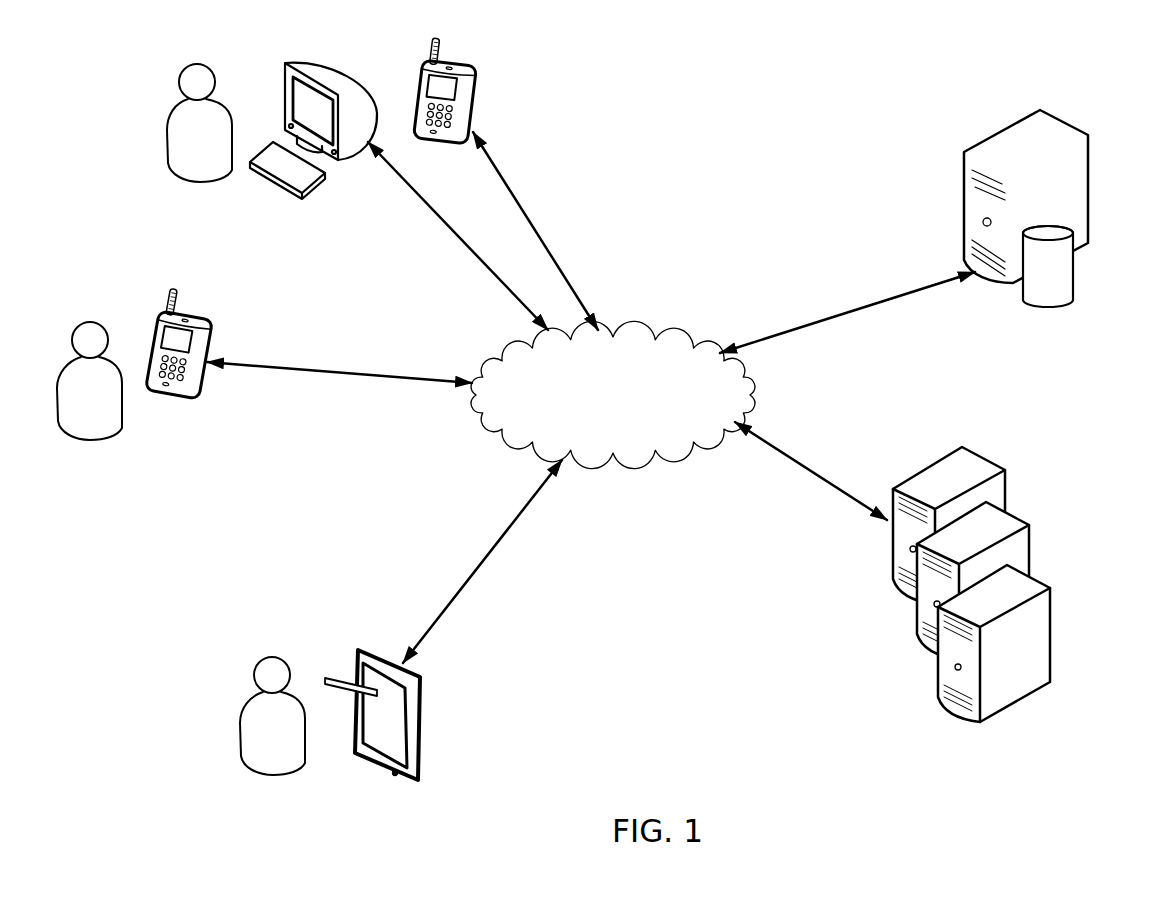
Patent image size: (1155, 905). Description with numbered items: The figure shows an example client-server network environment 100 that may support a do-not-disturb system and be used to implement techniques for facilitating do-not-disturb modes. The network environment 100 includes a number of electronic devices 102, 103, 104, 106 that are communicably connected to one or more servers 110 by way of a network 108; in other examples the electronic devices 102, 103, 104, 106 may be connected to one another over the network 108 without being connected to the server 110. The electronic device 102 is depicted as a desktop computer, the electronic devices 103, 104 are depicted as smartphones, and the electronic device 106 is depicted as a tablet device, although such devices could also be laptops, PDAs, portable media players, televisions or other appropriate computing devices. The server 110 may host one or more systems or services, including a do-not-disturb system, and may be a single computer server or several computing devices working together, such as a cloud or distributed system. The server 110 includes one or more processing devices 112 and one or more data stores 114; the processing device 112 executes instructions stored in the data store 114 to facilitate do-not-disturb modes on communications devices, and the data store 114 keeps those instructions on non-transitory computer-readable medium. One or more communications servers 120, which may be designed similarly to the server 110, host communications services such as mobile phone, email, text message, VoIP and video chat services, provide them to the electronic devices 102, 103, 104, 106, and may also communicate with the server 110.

The network environment 100 is at (692, 104).
The electronic device 102 is at (313, 63).
The electronic device 103 is at (455, 70).
The electronic device 104 is at (200, 320).
The electronic device 106 is at (365, 648).
The network 108 is at (612, 332).
The server 110 is at (936, 212).
The processing device 112 is at (1063, 120).
The data store 114 is at (1073, 283).
The communications server 120 is at (870, 611).